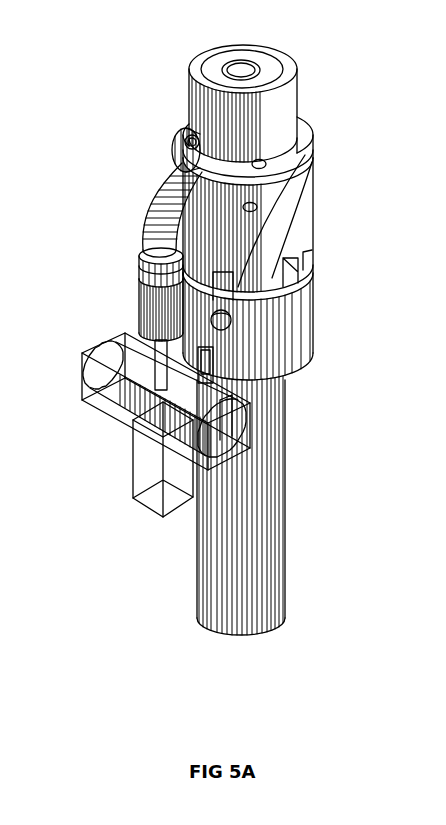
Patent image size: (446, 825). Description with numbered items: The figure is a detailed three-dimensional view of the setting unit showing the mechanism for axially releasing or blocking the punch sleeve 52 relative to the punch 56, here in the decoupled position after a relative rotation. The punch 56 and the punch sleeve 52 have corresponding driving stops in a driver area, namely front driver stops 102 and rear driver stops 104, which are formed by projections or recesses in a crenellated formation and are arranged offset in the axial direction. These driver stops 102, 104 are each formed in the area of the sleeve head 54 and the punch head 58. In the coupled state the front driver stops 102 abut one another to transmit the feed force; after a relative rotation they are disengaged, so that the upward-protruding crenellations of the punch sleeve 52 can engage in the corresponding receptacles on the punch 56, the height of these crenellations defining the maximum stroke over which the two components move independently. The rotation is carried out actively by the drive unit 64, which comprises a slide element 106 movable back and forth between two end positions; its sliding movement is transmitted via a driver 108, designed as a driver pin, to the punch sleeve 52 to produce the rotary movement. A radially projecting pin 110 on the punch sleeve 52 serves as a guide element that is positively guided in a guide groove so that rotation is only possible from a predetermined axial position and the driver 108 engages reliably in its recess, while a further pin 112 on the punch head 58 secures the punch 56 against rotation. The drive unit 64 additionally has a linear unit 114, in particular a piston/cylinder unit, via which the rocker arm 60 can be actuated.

The punch sleeve 52 is at (299, 326).
The sleeve head 54 is at (300, 327).
The punch 56 is at (294, 199).
The punch head 58 is at (300, 200).
The rocker arm 60 is at (170, 195).
The drive unit 64 is at (81, 436).
The front driver stops 102 is at (286, 278).
The rear driver stops 104 is at (307, 163).
The slide element 106 is at (160, 430).
The driver 108 is at (235, 378).
The pin 110 is at (232, 317).
The further pin 112 is at (185, 138).
The linear unit 114 is at (138, 291).